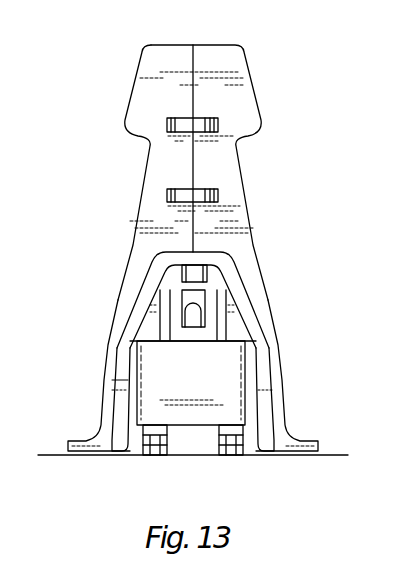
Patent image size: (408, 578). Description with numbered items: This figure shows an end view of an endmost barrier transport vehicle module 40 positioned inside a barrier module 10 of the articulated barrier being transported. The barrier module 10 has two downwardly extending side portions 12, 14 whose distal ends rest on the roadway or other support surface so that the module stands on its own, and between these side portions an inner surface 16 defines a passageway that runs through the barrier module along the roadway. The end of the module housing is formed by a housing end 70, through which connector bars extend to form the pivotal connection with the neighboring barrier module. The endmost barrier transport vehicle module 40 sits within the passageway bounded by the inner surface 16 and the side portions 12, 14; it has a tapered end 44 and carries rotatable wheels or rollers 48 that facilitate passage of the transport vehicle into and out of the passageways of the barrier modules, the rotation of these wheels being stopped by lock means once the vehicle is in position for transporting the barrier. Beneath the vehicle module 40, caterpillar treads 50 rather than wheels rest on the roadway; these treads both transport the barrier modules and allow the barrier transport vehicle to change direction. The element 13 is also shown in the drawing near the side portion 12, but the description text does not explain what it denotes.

The tool 10 is at (252, 90).
The housing 70 is at (228, 168).
The first leg 12 is at (103, 392).
The second leg 14 is at (288, 427).
The arch member 16 is at (216, 281).
The slot 48 is at (188, 268).
The opening 44 is at (155, 322).
The module 40 is at (240, 367).
The inner leg 13 is at (130, 386).
The feet 50 is at (153, 442).